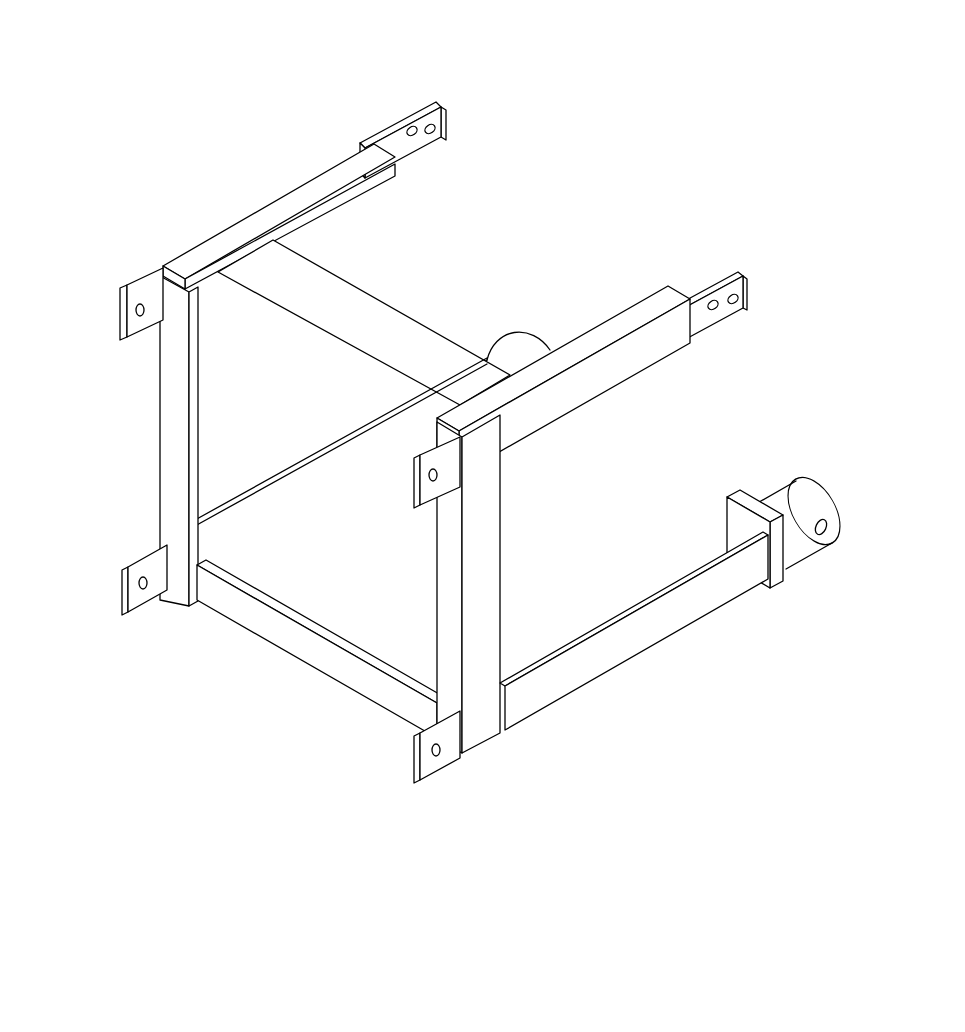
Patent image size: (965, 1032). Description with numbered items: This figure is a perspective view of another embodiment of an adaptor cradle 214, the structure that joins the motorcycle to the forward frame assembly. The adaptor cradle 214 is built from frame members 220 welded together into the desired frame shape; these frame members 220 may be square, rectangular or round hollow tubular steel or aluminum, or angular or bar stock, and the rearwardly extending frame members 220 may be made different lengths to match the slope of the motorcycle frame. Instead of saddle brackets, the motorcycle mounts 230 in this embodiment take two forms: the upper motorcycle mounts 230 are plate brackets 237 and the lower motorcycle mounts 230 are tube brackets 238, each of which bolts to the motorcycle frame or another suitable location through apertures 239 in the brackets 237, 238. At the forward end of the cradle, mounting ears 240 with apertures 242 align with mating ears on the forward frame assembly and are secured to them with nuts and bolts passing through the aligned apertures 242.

The adaptor cradle 214 is at (148, 128).
The frame members 220 is at (270, 215).
The motorcycle mounts 230 is at (645, 325).
The plate brackets 237 is at (436, 104).
The tube brackets 238 is at (525, 347).
The apertures 239 is at (414, 136).
The mounting ears 240 is at (142, 283).
The apertures 242 is at (136, 314).